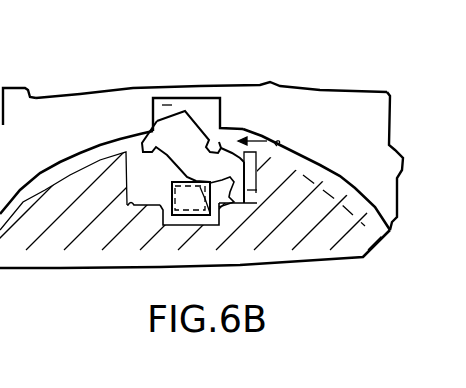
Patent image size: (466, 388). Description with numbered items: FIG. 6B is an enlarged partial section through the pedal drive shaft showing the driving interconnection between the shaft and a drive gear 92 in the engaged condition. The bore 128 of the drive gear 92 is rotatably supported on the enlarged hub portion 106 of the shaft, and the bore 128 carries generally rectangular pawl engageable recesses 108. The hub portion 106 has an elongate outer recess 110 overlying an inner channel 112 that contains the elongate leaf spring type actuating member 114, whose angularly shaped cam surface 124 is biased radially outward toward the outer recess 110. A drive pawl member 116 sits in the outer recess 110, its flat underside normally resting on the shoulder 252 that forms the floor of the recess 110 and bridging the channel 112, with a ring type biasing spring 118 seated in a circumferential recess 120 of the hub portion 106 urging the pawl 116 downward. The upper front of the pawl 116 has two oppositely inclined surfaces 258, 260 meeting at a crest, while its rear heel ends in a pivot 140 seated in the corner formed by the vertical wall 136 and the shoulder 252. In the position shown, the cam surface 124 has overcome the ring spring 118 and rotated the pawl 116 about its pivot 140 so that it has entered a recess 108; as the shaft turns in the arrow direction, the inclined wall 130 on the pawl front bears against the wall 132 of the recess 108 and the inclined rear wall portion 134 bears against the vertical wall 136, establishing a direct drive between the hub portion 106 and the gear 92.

The drive gear 92 is at (113, 127).
The enlarged hub portion 106 is at (100, 200).
The pawl engageable recess 108 is at (199, 116).
The outer recess 110 is at (114, 190).
The inner channel 112 is at (161, 218).
The leaf spring type actuating member 114 is at (198, 228).
The drive pawl member 116 is at (143, 115).
The ring type biasing spring 118 is at (242, 129).
The circumferential recess 120 is at (325, 170).
The cam surface 124 is at (214, 210).
The bore 128 is at (278, 146).
The inclined wall 130 is at (110, 138).
The wall of the recess 132 is at (132, 88).
The inclined wall portion 134 is at (258, 221).
The vertical wall 136 is at (257, 158).
The pivot 140 is at (257, 212).
The shoulder 252 is at (118, 228).
The inclined surface 258 is at (168, 103).
The inclined surface 260 is at (243, 86).